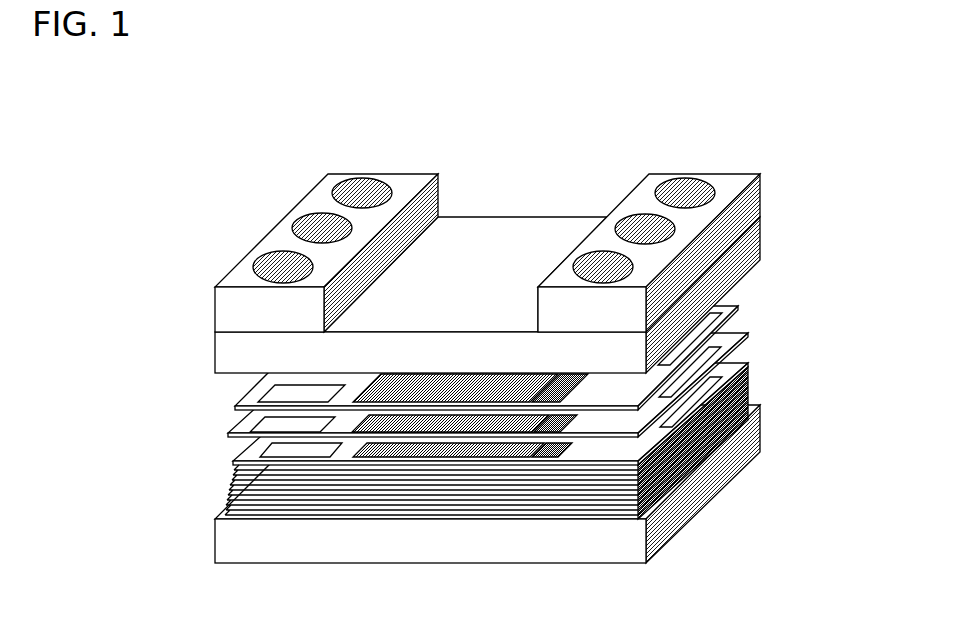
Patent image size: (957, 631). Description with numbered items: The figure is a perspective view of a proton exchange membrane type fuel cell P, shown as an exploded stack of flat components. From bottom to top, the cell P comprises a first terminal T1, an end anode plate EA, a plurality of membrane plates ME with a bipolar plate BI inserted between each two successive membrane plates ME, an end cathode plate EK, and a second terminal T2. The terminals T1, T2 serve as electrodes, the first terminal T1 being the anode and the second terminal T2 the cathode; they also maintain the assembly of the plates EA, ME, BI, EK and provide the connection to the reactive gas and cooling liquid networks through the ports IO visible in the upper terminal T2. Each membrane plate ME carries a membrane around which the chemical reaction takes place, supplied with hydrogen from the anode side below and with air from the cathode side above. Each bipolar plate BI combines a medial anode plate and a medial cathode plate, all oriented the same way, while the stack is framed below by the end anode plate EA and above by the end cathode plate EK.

The fuel cell P is at (261, 136).
The first terminal T1 is at (225, 545).
The second terminal T2 is at (216, 338).
The insert opening IO is at (690, 192).
The end cathode plate EK is at (233, 408).
The membrane plate ME is at (228, 436).
The bipolar plate BI is at (233, 466).
The end anode plate EA is at (230, 497).